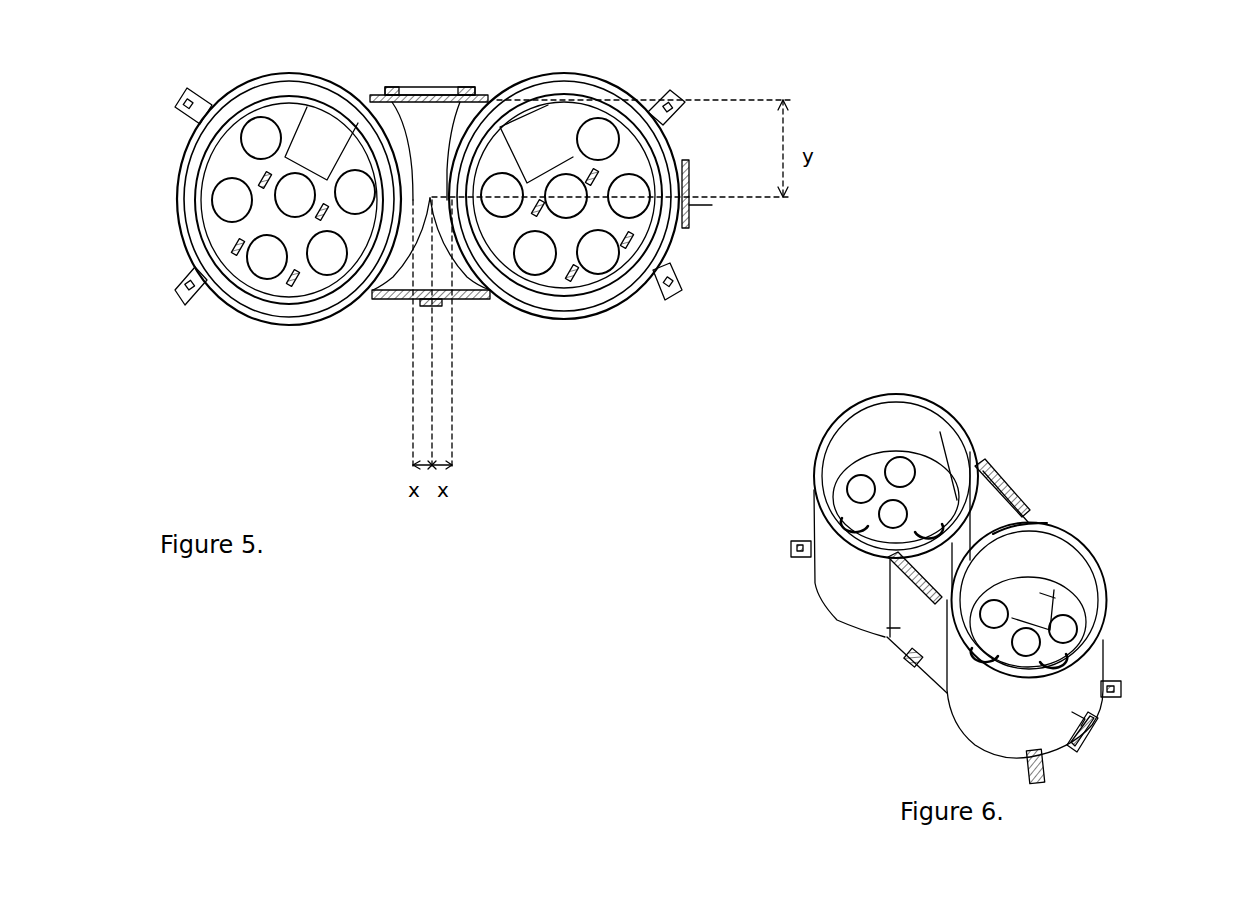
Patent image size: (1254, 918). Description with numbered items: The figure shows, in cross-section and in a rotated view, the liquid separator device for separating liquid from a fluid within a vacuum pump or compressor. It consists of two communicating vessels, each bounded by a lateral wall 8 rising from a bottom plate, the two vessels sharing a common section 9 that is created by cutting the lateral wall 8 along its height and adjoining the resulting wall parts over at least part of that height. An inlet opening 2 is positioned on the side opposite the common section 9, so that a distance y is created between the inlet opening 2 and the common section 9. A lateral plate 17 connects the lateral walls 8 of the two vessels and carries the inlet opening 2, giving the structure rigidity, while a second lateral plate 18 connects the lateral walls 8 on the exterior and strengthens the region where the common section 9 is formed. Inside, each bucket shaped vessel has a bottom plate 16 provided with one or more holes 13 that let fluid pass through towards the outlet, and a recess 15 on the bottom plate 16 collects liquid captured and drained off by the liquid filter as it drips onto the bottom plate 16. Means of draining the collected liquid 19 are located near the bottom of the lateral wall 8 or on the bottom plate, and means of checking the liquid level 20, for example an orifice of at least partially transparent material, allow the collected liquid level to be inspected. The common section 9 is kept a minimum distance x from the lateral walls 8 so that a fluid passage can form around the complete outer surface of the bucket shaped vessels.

In FIG. 6, the inlet opening 2 is at (1010, 503).
In FIG. 5, the lateral wall 8 is at (290, 320).
In FIG. 6, the lateral wall 8 is at (835, 586).
In FIG. 5, the common section 9 is at (393, 102).
In FIG. 6, the common section 9 is at (1040, 525).
In FIG. 5, the holes 13 is at (232, 200).
In FIG. 6, the holes 13 is at (900, 458).
In FIG. 5, the recess 15 is at (320, 150).
In FIG. 6, the recess 15 is at (928, 493).
In FIG. 5, the bottom plate 16 is at (318, 290).
In FIG. 6, the bottom plate 16 is at (860, 520).
In FIG. 5, the lateral plate 17 is at (445, 87).
In FIG. 6, the lateral plate 17 is at (977, 467).
In FIG. 5, the second lateral plate 18 is at (497, 303).
In FIG. 6, the second lateral plate 18 is at (900, 628).
In FIG. 6, the means of draining the collected liquid 19 is at (1093, 727).
In FIG. 6, the means of checking the liquid level 20 is at (905, 658).